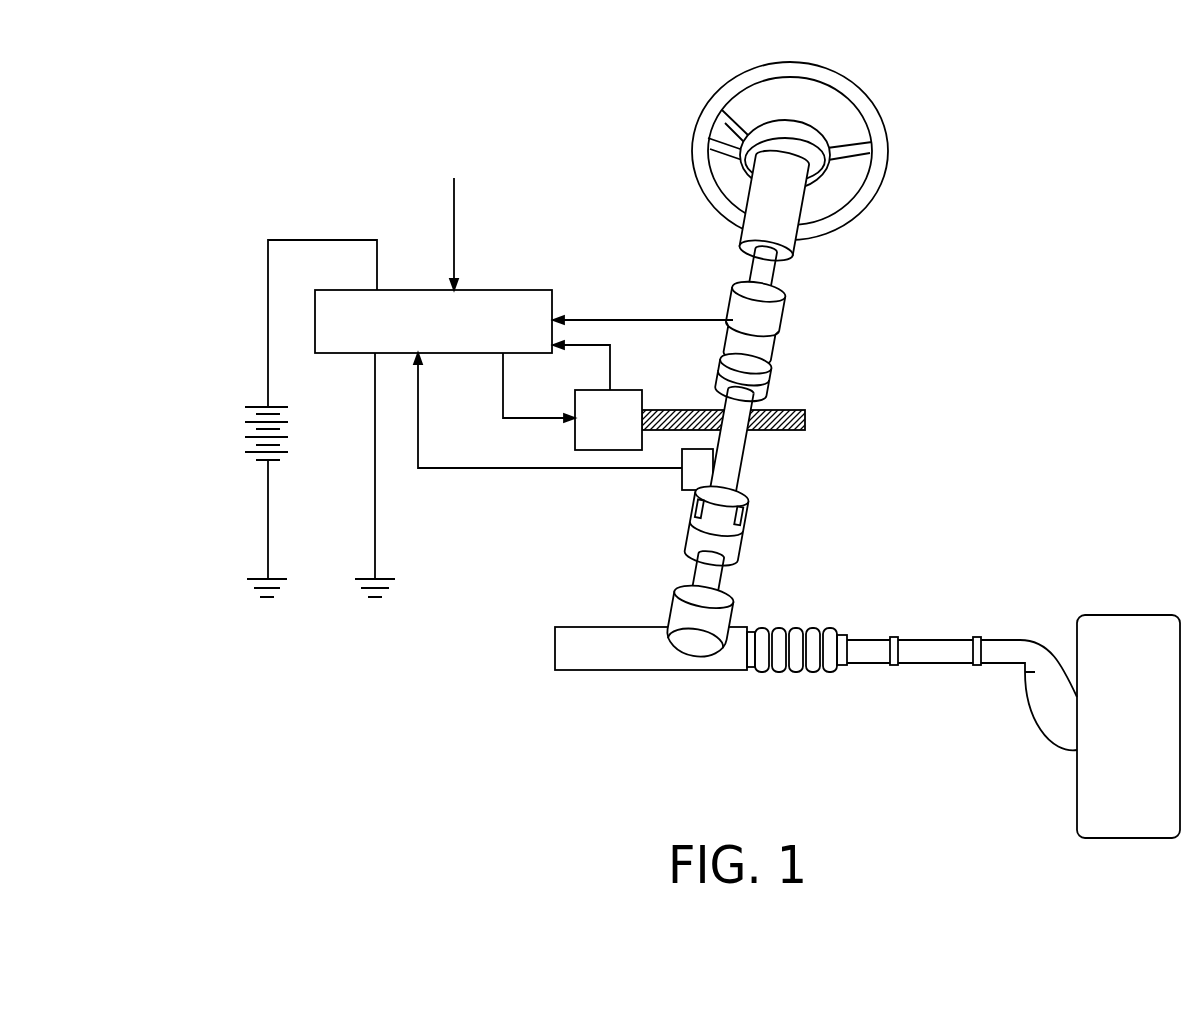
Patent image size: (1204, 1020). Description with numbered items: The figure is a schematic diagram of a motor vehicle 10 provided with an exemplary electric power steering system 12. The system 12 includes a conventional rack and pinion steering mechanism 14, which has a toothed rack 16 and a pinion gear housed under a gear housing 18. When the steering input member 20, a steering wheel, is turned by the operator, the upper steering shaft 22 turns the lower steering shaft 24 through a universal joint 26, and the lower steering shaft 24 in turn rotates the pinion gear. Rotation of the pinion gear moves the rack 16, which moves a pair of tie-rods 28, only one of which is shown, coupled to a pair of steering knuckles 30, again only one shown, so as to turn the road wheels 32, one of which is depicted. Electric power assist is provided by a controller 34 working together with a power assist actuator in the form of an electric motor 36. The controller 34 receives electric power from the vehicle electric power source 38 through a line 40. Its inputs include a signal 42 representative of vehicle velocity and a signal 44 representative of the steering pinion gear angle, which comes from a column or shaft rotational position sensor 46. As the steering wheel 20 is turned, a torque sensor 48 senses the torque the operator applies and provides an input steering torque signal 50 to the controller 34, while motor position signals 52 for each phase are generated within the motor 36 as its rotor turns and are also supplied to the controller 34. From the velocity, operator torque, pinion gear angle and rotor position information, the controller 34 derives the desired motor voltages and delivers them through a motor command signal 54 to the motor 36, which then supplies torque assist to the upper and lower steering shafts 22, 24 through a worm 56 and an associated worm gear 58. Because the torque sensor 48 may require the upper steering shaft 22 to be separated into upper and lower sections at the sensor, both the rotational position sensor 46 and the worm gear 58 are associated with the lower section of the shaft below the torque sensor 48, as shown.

The motor vehicle 10 is at (1148, 408).
The electric power steering system 12 is at (984, 263).
The rack and pinion steering mechanism 14 is at (789, 677).
The toothed rack 16 is at (583, 658).
The gear housing 18 is at (683, 608).
The steering input member 20 is at (862, 90).
The upper steering shaft 22 is at (777, 262).
The lower steering shaft 24 is at (718, 582).
The universal joint 26 is at (745, 518).
The tie-rods 28 is at (917, 653).
The steering knuckles 30 is at (1053, 728).
The road wheels 32 is at (1117, 625).
The controller 34 is at (492, 290).
The electric motor 36 is at (632, 397).
The vehicle electric power source 38 is at (268, 407).
The line 40 is at (290, 238).
The vehicle velocity signal 42 is at (457, 188).
The steering pinion gear angle signal 44 is at (450, 468).
The rotational position sensor 46 is at (682, 483).
The torque sensor 48 is at (783, 330).
The input steering torque signal 50 is at (677, 318).
The motor position signals 52 is at (610, 362).
The motor command signal 54 is at (502, 390).
The worm 56 is at (805, 425).
The worm gear 58 is at (770, 392).